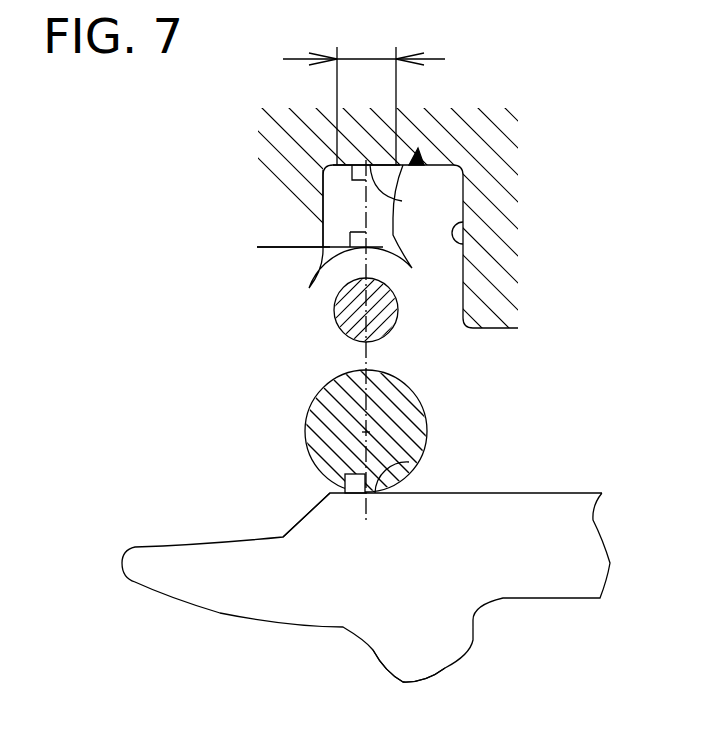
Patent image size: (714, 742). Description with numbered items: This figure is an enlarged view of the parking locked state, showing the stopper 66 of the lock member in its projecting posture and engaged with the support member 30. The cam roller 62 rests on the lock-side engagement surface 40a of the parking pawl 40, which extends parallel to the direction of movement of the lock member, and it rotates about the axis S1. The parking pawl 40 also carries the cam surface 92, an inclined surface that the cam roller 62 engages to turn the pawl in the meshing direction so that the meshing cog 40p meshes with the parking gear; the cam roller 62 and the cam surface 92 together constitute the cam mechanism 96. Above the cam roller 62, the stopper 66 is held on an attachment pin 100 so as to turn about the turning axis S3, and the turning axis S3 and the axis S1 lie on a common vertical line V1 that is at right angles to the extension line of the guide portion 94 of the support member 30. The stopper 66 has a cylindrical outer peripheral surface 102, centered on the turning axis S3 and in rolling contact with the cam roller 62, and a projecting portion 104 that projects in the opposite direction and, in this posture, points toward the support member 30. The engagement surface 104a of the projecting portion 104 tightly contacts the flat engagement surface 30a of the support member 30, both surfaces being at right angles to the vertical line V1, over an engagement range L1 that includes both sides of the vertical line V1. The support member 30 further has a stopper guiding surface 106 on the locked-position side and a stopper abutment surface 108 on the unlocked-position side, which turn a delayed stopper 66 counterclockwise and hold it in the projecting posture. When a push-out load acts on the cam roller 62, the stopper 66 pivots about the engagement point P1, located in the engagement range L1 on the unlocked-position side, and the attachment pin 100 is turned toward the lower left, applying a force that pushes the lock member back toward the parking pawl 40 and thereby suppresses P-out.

The support member 30 is at (483, 145).
The engagement surface 30a is at (402, 206).
The stopper 66 is at (418, 155).
The stopper guiding surface 106 is at (467, 240).
The projecting portion 104 is at (350, 222).
The engagement surface 104a is at (356, 163).
The stopper abutment surface 108 is at (321, 178).
The guide portion 94 is at (277, 248).
The engagement point P1 is at (350, 165).
The engagement range L1 is at (364, 92).
The cylindrical outer peripheral surface 102 is at (313, 346).
The attachment pin 100 is at (345, 312).
The turning axis S3 is at (372, 326).
The cam roller 62 is at (397, 428).
The axis S1 is at (350, 450).
The lock-side engagement surface 40a is at (390, 470).
The parking pawl 40 is at (538, 586).
The meshing cog 40p is at (398, 652).
The cam surface 92 is at (298, 518).
The vertical line V1 is at (367, 541).
The cam mechanism 96 is at (268, 462).